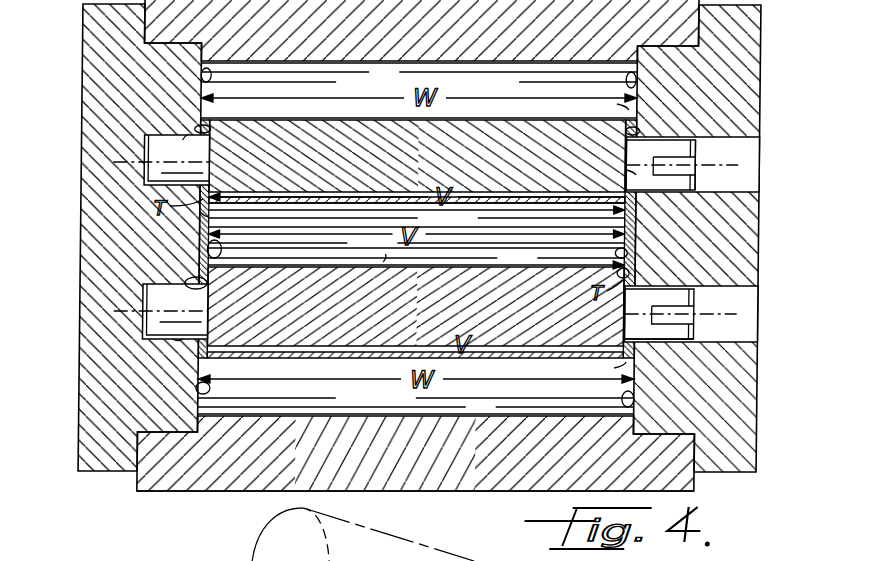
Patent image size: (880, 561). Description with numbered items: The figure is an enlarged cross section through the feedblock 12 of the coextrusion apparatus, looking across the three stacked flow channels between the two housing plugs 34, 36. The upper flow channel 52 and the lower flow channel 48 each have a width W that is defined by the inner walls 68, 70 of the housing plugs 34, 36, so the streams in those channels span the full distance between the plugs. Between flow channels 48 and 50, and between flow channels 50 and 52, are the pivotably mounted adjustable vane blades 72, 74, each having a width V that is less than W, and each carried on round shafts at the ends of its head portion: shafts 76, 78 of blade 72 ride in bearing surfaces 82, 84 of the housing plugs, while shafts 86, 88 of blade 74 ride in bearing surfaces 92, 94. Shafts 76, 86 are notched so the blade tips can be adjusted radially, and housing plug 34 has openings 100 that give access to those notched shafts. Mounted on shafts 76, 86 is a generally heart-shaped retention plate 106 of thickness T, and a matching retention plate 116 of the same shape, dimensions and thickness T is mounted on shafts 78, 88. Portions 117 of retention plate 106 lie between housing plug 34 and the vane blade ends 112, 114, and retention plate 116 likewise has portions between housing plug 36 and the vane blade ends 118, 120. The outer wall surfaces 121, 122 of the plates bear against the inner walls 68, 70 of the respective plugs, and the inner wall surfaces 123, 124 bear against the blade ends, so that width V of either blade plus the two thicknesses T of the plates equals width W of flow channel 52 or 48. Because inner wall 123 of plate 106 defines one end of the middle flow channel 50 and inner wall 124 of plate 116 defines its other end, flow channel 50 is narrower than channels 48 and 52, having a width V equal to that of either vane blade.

The feedblock 12 is at (208, 495).
The housing plug 34 is at (740, 26).
The housing plug 36 is at (90, 398).
The flow channel 48 is at (330, 420).
The flow channel 50 is at (384, 260).
The flow channel 52 is at (381, 78).
The inner wall 68 is at (637, 82).
The inner wall 70 is at (201, 69).
The adjustable vane blade 72 is at (400, 339).
The adjustable vane blade 74 is at (370, 167).
The round shaft 76 is at (686, 339).
The round shaft 78 is at (152, 322).
The bearing surface 82 is at (636, 341).
The bearing surface 84 is at (182, 340).
The round shaft 86 is at (676, 140).
The round shaft 88 is at (146, 138).
The bearing surface 92 is at (655, 140).
The bearing surface 94 is at (184, 140).
The opening 100 is at (748, 148).
The retention plate 106 is at (642, 215).
The vane blade end 112 is at (641, 273).
The vane blade end 114 is at (628, 132).
The retention plate 116 is at (194, 231).
The portion of retention plate 117 is at (622, 104).
The vane blade end 118 is at (211, 284).
The vane blade end 120 is at (212, 134).
The outer wall surface 121 is at (630, 172).
The outer wall surface 122 is at (209, 216).
The inner wall surface 123 is at (630, 254).
The inner wall surface 124 is at (205, 253).